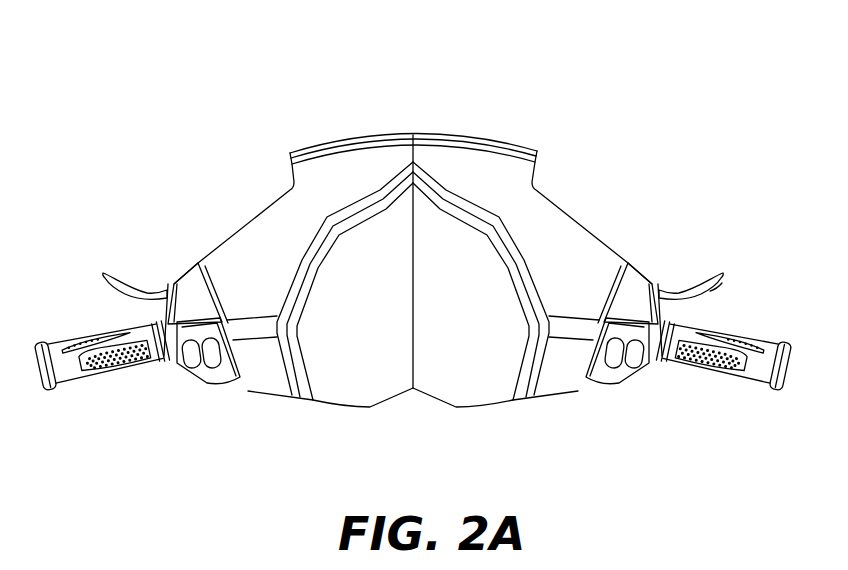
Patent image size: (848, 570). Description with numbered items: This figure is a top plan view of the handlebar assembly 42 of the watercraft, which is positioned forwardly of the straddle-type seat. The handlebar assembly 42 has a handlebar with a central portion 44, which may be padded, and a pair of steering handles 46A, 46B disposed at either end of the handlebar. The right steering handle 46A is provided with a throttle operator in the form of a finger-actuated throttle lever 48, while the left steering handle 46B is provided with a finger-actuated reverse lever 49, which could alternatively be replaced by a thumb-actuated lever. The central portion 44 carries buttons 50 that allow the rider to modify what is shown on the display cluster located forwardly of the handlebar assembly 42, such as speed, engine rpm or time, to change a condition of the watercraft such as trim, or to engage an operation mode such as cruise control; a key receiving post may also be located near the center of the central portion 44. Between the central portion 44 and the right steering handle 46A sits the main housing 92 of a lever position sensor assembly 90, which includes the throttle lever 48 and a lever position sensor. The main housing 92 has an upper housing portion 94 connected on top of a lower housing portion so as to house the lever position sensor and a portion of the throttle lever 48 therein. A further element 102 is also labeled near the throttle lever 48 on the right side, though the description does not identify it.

The handlebar assembly 42 is at (574, 122).
The central portion 44 is at (416, 408).
The right steering handle 46A is at (720, 376).
The left steering handle 46B is at (78, 384).
The throttle lever 48 is at (710, 270).
The reverse lever 49 is at (137, 290).
The buttons 50 is at (213, 363).
The lever position sensor assembly 90 is at (668, 220).
The main housing 92 is at (634, 283).
The upper housing portion 94 is at (645, 316).
The lever pivot end 102 is at (722, 290).